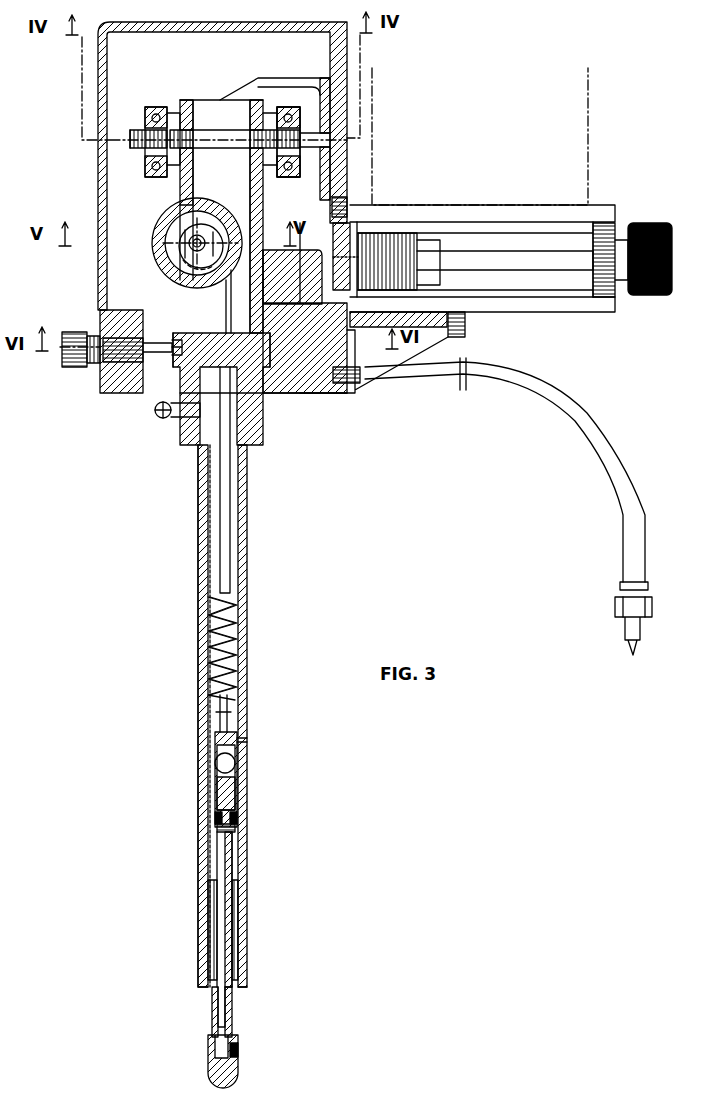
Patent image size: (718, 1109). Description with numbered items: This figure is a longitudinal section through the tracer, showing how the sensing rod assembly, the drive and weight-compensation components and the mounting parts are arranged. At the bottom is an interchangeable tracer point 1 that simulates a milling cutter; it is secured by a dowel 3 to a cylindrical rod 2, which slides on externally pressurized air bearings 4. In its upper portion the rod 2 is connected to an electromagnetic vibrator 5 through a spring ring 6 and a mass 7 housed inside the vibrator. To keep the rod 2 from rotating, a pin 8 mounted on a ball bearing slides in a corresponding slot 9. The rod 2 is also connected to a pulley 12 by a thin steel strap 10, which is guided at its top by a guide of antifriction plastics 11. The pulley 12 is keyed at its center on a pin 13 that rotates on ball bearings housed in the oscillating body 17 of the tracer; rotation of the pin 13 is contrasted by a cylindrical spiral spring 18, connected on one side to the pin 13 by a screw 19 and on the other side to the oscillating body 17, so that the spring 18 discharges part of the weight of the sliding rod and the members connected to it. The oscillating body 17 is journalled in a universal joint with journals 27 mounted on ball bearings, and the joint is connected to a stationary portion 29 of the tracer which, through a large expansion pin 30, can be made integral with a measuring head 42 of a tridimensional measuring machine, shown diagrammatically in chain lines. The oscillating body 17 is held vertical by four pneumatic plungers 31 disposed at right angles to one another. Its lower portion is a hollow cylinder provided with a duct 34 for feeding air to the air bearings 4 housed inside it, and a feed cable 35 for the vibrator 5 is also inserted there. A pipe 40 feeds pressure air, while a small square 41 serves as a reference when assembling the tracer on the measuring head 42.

The tracer point 1 is at (230, 1075).
The cylindrical rod 2 is at (232, 1005).
The dowel 3 is at (237, 1048).
The air bearings 4 is at (240, 913).
The electromagnetic vibrator 5 is at (232, 815).
The spring ring 6 is at (213, 767).
The mass 7 is at (213, 790).
The pin 8 is at (243, 745).
The slot 9 is at (240, 703).
The thin steel strap 10 is at (222, 572).
The guide of antifriction plastics 11 is at (231, 300).
The pulley 12 is at (173, 242).
The pin 13 is at (220, 240).
The oscillating body 17 is at (253, 353).
The cylindrical spiral spring 18 is at (200, 235).
The screw 19 is at (205, 237).
The journals 27 is at (130, 138).
The stationary portion 29 is at (337, 48).
The large expansion pin 30 is at (450, 292).
The pneumatic plungers 31 is at (162, 343).
The duct 34 is at (202, 555).
The feed cable 35 is at (215, 643).
The pipe 40 is at (430, 382).
The small square 41 is at (465, 323).
The measuring head 42 is at (593, 203).